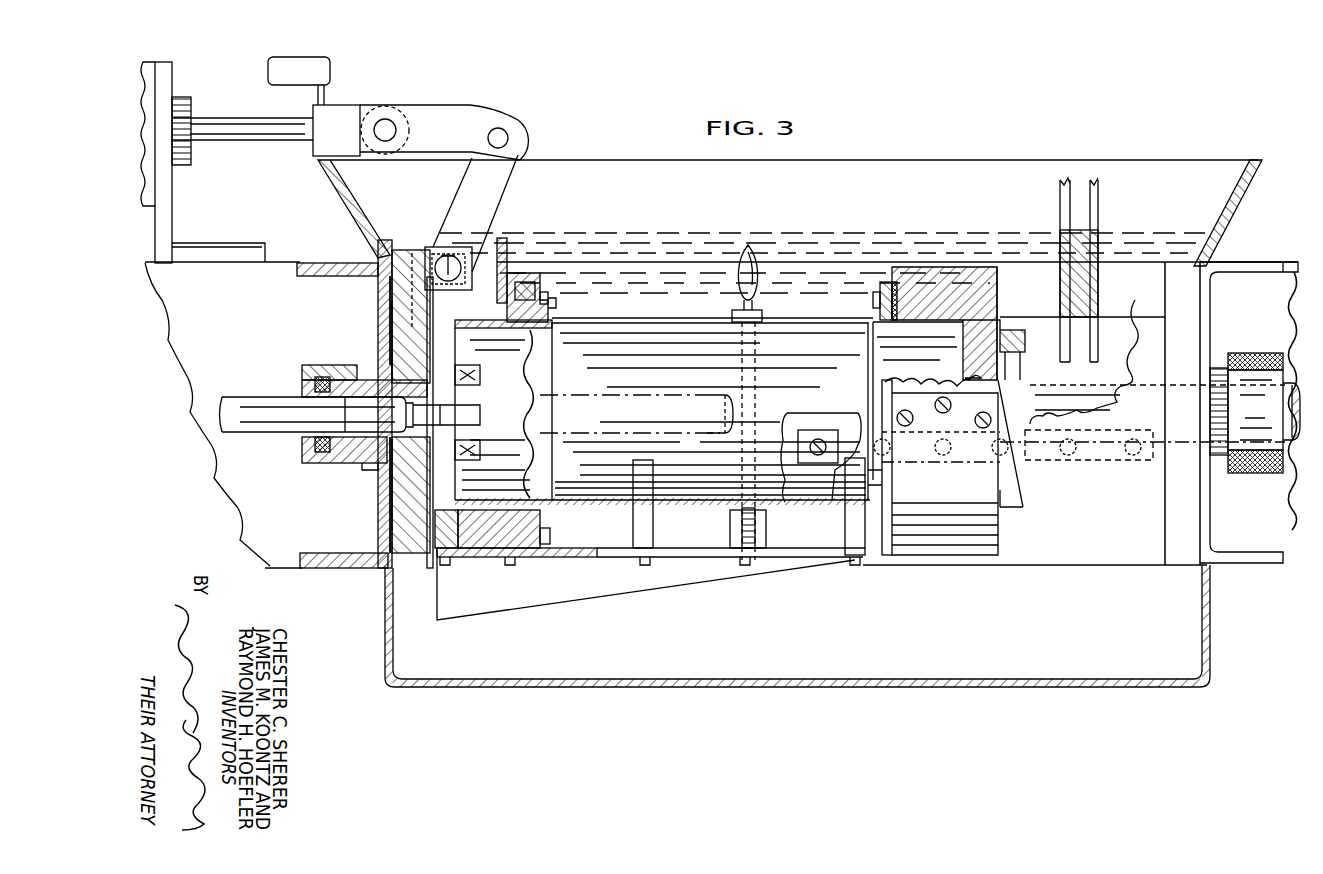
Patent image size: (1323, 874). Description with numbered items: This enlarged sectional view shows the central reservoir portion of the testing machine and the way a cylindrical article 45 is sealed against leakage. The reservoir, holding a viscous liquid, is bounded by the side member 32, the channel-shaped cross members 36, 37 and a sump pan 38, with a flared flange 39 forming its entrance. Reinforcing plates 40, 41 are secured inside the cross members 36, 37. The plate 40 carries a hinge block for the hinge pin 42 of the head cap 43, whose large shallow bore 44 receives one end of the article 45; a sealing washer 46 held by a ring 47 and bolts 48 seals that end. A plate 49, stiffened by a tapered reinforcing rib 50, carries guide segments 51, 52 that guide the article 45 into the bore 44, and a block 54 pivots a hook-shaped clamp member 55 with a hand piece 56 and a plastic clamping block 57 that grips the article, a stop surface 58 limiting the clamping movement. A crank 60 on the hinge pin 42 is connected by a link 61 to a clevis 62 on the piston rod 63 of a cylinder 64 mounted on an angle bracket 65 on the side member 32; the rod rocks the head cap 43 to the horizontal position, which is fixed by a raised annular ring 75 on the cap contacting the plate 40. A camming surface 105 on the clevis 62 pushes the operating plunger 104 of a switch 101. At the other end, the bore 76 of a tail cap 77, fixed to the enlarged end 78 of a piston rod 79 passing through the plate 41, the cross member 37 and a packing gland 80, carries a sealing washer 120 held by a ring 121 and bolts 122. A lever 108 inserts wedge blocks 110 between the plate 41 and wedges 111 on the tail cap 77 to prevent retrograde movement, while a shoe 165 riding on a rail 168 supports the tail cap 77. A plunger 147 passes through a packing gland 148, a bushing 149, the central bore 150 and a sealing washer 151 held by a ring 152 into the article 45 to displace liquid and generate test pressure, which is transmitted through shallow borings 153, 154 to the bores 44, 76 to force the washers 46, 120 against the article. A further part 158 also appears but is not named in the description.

The side member 32 is at (226, 479).
The cross member 36 is at (388, 297).
The cross member 37 is at (1224, 262).
The sump pan 38 is at (705, 686).
The flared flange 39 is at (1240, 203).
The reinforcing plate 40 is at (400, 337).
The reinforcing plate 41 is at (1183, 296).
The hinge pin 42 is at (430, 260).
The head cap 43 is at (520, 272).
The large shallow bore 44 is at (536, 290).
The cylindrical article 45 is at (652, 328).
The sealing washer 46 is at (528, 338).
The ring 47 is at (552, 298).
The bolts 48 is at (556, 307).
The plate 49 is at (598, 556).
The tapered reinforcing rib 50 is at (528, 598).
The guide segment 51 is at (652, 528).
The guide segment 52 is at (845, 528).
The block 54 is at (740, 538).
The hook-shaped clamp member 55 is at (742, 302).
The hand piece 56 is at (748, 246).
The clamping block 57 is at (732, 316).
The stop surface 58 is at (725, 410).
The crank 60 is at (498, 183).
The link 61 is at (445, 115).
The clevis 62 is at (338, 110).
The piston rod 63 is at (262, 140).
The cylinder 64 is at (144, 62).
The angle bracket 65 is at (168, 78).
The raised annular ring 75 is at (400, 250).
The large shallow bore 76 is at (997, 290).
The tail cap 77 is at (935, 270).
The enlarged end 78 is at (1018, 340).
The piston rod 79 is at (1050, 402).
The packing gland 80 is at (1266, 353).
The switch 101 is at (295, 62).
The operating plunger 104 is at (318, 95).
The camming surface 105 is at (382, 106).
The lever 108 is at (1076, 200).
The wedge blocks 110 is at (1124, 310).
The wedges 111 is at (1010, 505).
The sealing washer 120 is at (898, 282).
The ring 121 is at (880, 292).
The bolts 122 is at (873, 302).
The plunger 147 is at (268, 403).
The packing gland 148 is at (312, 448).
The bushing 149 is at (366, 450).
The central bore 150 is at (392, 345).
The sealing washer 151 is at (472, 422).
The ring 152 is at (470, 372).
The shallow borings 153 is at (388, 313).
The borings 154 is at (1000, 320).
The spacer plate 158 is at (503, 240).
The shoe 165 is at (890, 402).
The rail 168 is at (808, 430).